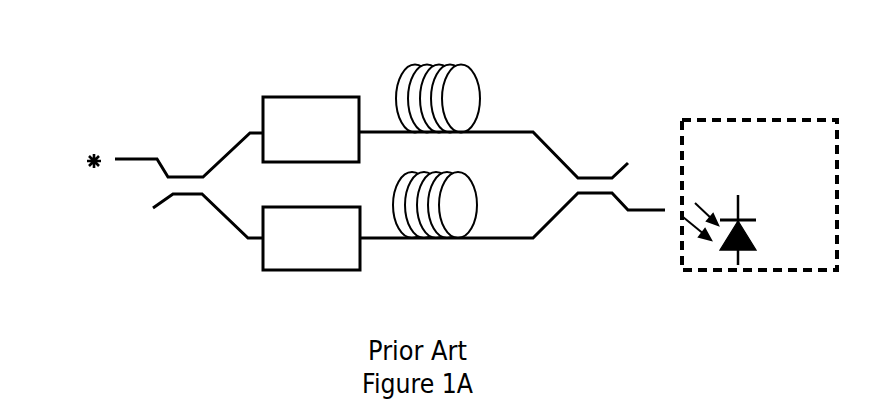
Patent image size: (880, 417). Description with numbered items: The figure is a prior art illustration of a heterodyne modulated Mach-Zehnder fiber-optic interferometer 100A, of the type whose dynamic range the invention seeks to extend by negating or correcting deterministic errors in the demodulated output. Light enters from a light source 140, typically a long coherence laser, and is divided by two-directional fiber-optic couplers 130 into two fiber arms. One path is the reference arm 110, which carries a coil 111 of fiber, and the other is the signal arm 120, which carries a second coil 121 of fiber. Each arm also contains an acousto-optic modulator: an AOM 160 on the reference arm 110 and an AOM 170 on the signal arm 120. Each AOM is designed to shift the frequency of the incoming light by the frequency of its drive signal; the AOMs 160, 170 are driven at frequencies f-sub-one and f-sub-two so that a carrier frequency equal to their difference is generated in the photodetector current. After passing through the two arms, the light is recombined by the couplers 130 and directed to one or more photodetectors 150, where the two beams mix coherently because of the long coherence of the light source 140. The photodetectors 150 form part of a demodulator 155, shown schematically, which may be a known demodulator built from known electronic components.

The heterodyne modulated Mach-Zehnder fiber-optic interferometer 100A is at (433, 170).
The reference arm 110 is at (518, 130).
The coil 111 is at (477, 80).
The signal arm 120 is at (495, 238).
The coil 121 is at (468, 175).
The two-directional fiber-optic couplers 130 is at (180, 173).
The light source 140 is at (90, 168).
The photodetectors 150 is at (740, 213).
The demodulator 155 is at (825, 263).
The acousto-optic modulator 160 is at (343, 103).
The acousto-optic modulator 170 is at (350, 260).